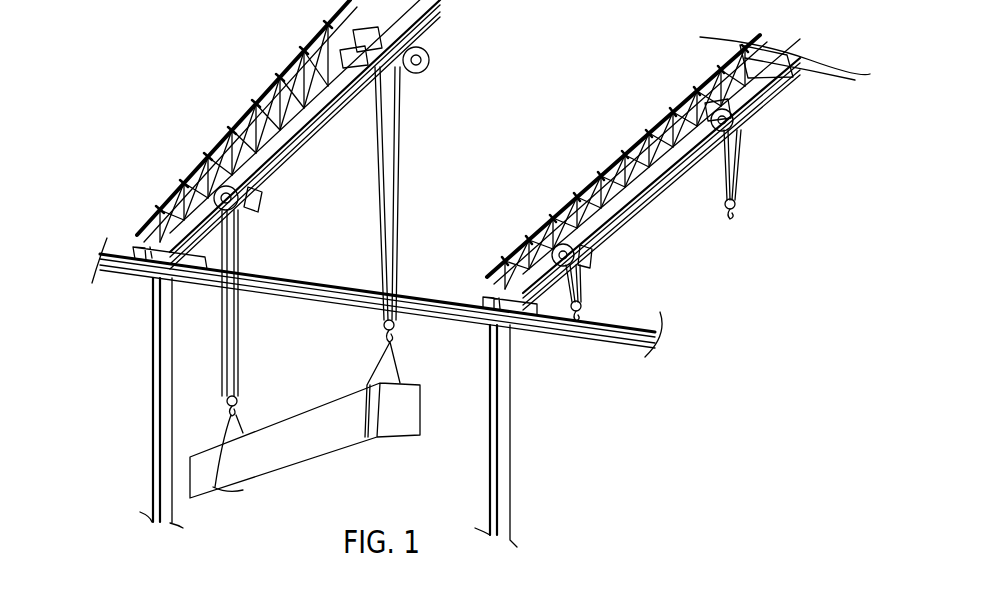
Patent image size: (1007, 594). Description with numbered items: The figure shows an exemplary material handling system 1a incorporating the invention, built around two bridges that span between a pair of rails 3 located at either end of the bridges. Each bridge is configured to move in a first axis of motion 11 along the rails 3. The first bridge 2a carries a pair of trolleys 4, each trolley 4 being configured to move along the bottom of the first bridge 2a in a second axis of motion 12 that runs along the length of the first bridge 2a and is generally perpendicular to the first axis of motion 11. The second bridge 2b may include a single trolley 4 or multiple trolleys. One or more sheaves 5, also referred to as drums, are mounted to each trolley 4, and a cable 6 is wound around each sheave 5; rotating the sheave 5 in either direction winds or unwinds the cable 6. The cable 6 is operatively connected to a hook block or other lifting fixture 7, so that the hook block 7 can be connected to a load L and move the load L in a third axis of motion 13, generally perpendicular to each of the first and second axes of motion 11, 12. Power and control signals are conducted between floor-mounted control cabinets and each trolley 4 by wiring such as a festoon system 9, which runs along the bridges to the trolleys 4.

The material handling system 1a is at (130, 27).
The first bridge 2a is at (461, 24).
The second bridge 2b is at (806, 99).
The rails 3 is at (430, 310).
The trolley 4 is at (449, 73).
The sheave 5 is at (402, 93).
The cable 6 is at (212, 328).
The hook block 7 is at (228, 398).
The festoon system 9 is at (290, 65).
The first axis of motion 11 is at (455, 299).
The second axis of motion 12 is at (330, 130).
The third axis of motion 13 is at (253, 323).
The load L is at (400, 405).